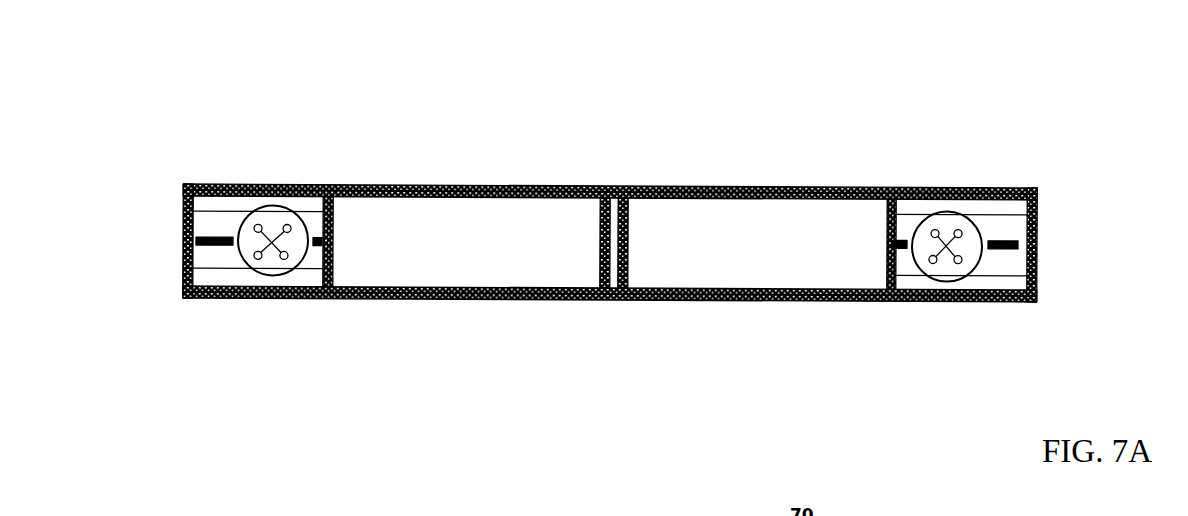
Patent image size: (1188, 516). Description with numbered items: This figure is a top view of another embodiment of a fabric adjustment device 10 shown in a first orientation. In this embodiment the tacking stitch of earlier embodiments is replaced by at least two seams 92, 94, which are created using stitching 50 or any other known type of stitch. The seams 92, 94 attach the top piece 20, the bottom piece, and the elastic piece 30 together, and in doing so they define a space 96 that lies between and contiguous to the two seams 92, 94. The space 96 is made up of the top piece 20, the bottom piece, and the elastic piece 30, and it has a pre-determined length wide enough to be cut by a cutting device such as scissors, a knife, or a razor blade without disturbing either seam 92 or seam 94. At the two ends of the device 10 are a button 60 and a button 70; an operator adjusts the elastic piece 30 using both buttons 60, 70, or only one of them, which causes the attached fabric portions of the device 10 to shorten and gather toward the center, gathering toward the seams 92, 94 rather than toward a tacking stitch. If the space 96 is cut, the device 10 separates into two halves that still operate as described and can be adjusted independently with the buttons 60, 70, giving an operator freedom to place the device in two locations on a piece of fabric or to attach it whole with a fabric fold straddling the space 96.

The fabric adjustment device 10 is at (137, 113).
The top piece 20 is at (405, 232).
The elastic piece 30 is at (213, 227).
The stitching 50 is at (792, 190).
The button 60 is at (270, 276).
The button 70 is at (947, 270).
The seam 92 is at (598, 226).
The seam 94 is at (630, 232).
The space 96 is at (603, 305).